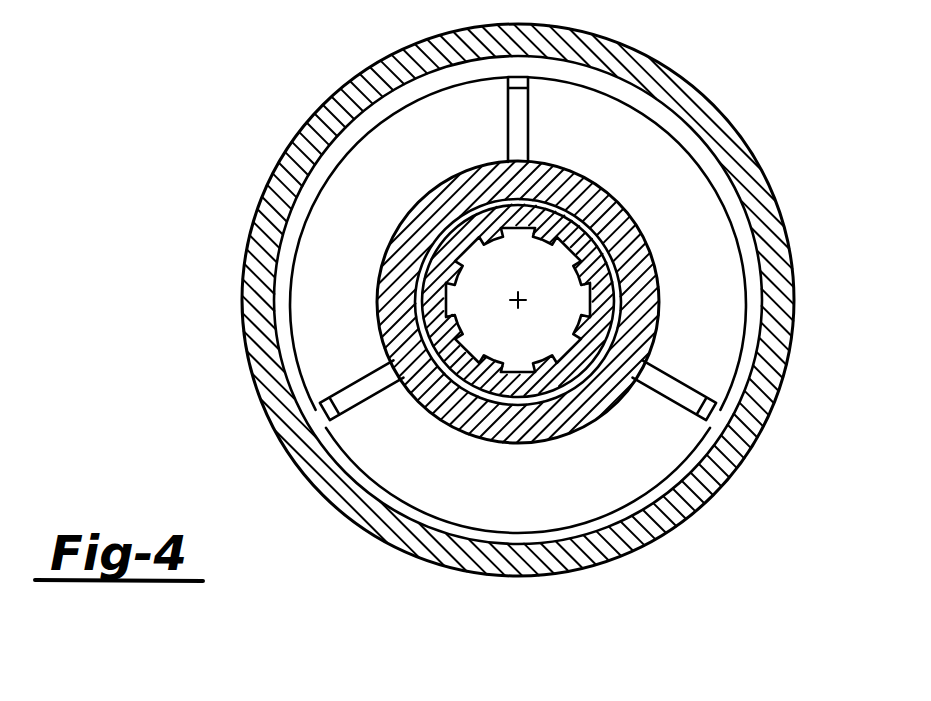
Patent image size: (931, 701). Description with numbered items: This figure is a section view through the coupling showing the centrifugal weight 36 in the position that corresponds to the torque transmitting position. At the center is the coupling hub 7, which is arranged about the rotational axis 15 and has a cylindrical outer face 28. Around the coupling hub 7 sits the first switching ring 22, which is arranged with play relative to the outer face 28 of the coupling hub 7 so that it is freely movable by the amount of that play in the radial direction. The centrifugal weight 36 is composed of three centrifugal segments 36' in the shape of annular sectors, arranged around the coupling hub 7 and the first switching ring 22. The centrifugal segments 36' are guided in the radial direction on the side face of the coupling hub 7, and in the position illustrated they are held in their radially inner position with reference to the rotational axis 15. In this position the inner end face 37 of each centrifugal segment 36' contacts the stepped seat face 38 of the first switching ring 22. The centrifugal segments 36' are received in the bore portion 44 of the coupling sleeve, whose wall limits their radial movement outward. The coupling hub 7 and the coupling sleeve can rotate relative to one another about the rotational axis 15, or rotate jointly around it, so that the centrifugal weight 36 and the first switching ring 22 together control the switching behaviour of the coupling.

The coupling hub 7 is at (546, 339).
The rotational axis 15 is at (514, 304).
The first switching ring 22 is at (518, 281).
The outer face of the coupling hub 28 is at (418, 402).
The centrifugal weight 36 is at (485, 298).
The centrifugal segments 36' is at (485, 298).
The inner end face 37 is at (662, 275).
The stepped seat face 38 is at (572, 411).
The bore portion of the coupling sleeve 44 is at (687, 133).